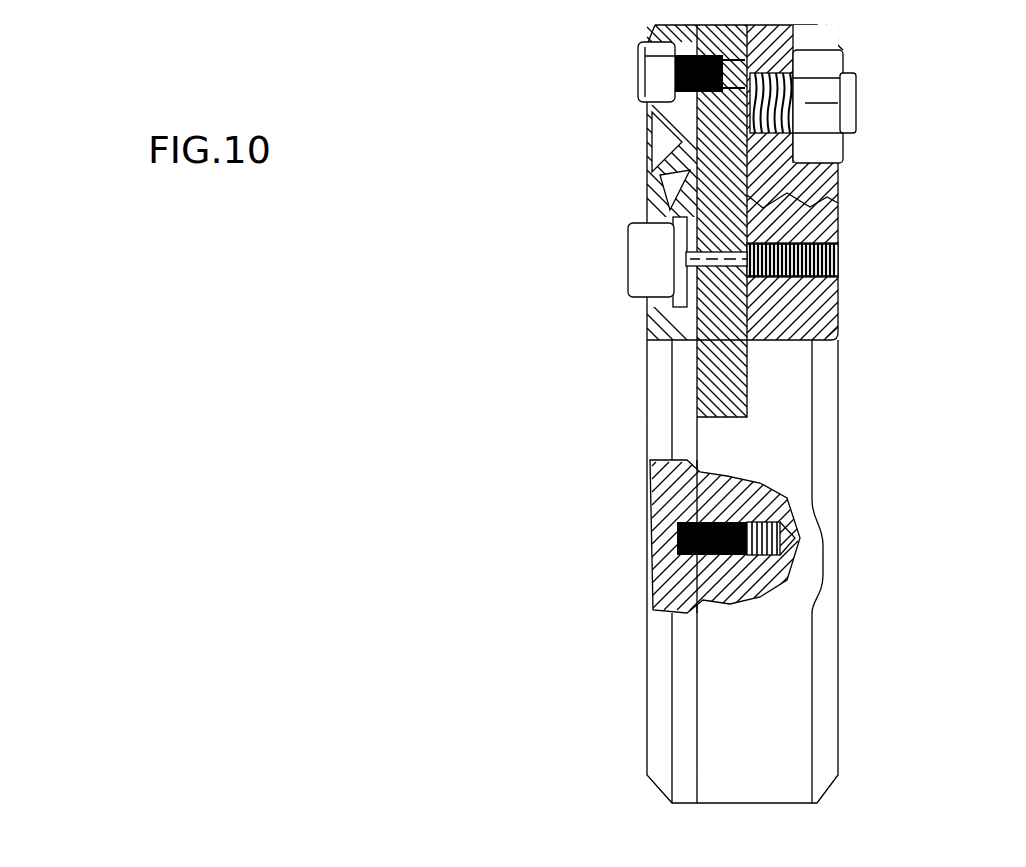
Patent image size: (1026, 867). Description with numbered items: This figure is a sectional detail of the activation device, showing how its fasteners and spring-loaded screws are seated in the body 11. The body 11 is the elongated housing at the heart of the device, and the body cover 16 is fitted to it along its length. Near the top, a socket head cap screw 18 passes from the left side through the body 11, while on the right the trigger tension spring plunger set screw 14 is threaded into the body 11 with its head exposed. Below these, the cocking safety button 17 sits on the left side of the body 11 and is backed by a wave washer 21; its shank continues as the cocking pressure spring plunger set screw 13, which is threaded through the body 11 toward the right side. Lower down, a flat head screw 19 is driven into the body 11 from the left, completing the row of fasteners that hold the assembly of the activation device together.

The body 11 is at (765, 679).
The cocking pressure spring plunger set screw 13 is at (840, 261).
The trigger tension spring plunger set screw 14 is at (876, 103).
The body cover 16 is at (660, 685).
The cocking safety button 17 is at (628, 258).
The socket head cap screws 18 is at (636, 72).
The flat head screws 19 is at (660, 538).
The wave washer 21 is at (685, 232).